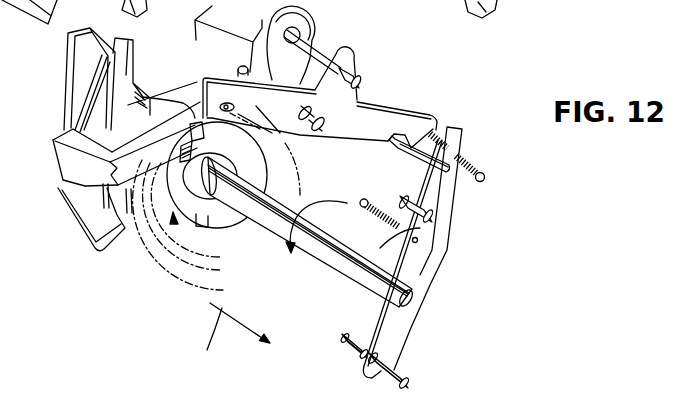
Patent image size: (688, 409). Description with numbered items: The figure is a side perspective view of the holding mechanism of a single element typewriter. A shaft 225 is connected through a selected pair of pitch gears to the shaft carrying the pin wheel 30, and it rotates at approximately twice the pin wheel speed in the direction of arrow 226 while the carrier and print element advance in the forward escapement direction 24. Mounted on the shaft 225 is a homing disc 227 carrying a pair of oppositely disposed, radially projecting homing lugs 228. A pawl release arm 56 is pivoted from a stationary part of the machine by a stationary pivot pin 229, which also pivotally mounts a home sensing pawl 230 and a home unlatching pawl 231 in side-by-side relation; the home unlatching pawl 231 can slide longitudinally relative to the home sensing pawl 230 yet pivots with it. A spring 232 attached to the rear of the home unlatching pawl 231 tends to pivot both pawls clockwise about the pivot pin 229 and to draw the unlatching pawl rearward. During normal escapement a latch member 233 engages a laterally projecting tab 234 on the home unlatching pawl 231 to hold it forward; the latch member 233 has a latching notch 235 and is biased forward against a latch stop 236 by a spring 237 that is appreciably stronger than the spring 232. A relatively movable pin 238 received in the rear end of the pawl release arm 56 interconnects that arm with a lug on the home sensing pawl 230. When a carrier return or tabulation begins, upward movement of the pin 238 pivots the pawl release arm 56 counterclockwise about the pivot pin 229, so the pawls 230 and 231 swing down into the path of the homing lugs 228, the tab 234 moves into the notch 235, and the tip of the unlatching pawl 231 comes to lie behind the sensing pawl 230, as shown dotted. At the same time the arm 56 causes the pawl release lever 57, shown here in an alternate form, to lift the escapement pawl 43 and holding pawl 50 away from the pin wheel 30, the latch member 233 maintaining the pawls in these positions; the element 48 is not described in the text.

The forward escapement direction 24 is at (243, 326).
The pin wheel 30 is at (203, 275).
The escapement pawl 43 is at (97, 115).
The spring housing 48 is at (77, 57).
The holding pawl 50 is at (127, 67).
The pawl release arm 56 is at (168, 162).
The release lever 57 is at (65, 153).
The shaft 225 is at (367, 268).
The arrow 226 is at (305, 258).
The homing disc 227 is at (198, 200).
The homing lugs 228 is at (292, 148).
The stationary pivot pin 229 is at (240, 66).
The home sensing pawl 230 is at (350, 135).
The home unlatching pawl 231 is at (232, 107).
The spring 232 is at (480, 165).
The latch member 233 is at (444, 232).
The tab 234 is at (425, 152).
The latching notch 235 is at (448, 133).
The latch stop 236 is at (425, 205).
The spring 237 is at (418, 238).
The relatively movable pin 238 is at (323, 50).